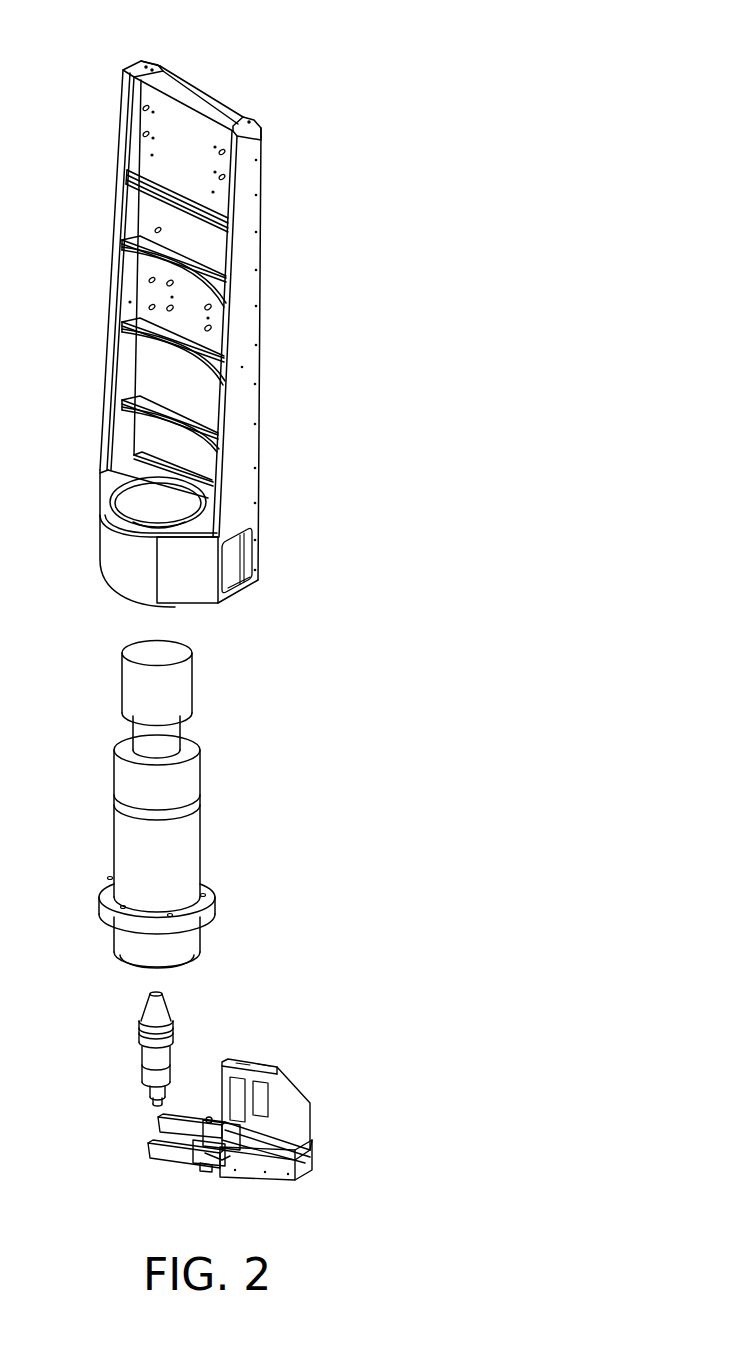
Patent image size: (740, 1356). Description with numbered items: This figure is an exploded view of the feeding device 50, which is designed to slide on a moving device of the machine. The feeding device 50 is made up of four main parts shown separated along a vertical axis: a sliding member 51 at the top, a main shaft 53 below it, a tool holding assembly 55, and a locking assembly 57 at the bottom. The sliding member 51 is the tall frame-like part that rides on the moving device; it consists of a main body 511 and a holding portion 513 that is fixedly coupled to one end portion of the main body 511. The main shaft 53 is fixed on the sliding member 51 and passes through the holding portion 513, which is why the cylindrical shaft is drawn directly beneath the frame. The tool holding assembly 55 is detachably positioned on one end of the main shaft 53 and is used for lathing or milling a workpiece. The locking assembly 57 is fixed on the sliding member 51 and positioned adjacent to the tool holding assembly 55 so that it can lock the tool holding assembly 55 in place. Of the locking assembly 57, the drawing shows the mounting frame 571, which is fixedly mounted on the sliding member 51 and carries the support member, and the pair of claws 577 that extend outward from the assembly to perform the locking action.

The feeding device 50 is at (243, 36).
The sliding member 51 is at (389, 426).
The main body 511 is at (232, 457).
The holding portion 513 is at (200, 578).
The main shaft 53 is at (173, 852).
The tool holding assembly 55 is at (153, 1053).
The locking assembly 57 is at (293, 1040).
The mounting frame 571 is at (307, 1098).
The claws 577 is at (173, 1155).